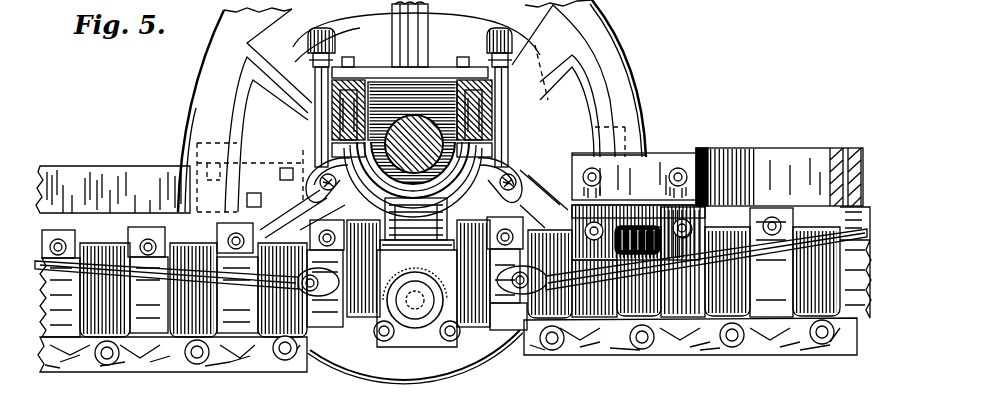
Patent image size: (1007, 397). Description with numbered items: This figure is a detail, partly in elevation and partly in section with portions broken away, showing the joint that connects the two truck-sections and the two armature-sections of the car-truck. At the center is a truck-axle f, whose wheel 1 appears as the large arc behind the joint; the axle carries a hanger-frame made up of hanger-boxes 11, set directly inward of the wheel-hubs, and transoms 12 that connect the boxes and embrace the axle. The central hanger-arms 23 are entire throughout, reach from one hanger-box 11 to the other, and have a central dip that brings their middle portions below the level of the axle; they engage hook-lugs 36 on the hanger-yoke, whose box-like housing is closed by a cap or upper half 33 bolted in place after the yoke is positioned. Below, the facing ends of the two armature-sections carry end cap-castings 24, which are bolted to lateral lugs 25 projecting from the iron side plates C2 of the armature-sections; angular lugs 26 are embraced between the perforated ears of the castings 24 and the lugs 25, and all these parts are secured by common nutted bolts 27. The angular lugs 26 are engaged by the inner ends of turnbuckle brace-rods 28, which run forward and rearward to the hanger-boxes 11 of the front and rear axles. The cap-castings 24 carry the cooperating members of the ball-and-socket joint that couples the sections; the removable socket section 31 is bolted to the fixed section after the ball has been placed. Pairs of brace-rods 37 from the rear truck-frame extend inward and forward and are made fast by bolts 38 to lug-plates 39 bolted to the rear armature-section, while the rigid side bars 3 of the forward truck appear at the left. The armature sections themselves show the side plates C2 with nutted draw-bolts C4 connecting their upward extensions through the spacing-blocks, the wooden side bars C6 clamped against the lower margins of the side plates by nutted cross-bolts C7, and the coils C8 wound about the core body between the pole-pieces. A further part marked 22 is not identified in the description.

The wheel 1 is at (616, 83).
The side bar 3 is at (108, 188).
The hanger-box 11 is at (312, 158).
The transom 12 is at (545, 99).
The central hanger-arm 23 is at (538, 125).
The truck-axle f is at (416, 142).
The hook-lug 36 is at (538, 160).
The lateral lug 25 is at (566, 215).
The cap of box 33 is at (348, 206).
The bracket nut 22 is at (482, 222).
The end cap-casting 24 is at (470, 310).
The angular lug 26 is at (517, 330).
The nutted bolt 27 is at (416, 306).
The removable socket section 31 is at (420, 313).
The brace-rod 37 is at (760, 165).
The bolt 38 is at (600, 174).
The lug-plate 39 is at (640, 370).
The turnbuckle brace-rod 28 is at (790, 195).
The side plate C2 is at (72, 240).
The draw-bolt C4 is at (160, 248).
The wooden side bar C6 is at (628, 345).
The cross-bolt C7 is at (712, 350).
The coil C8 is at (796, 284).